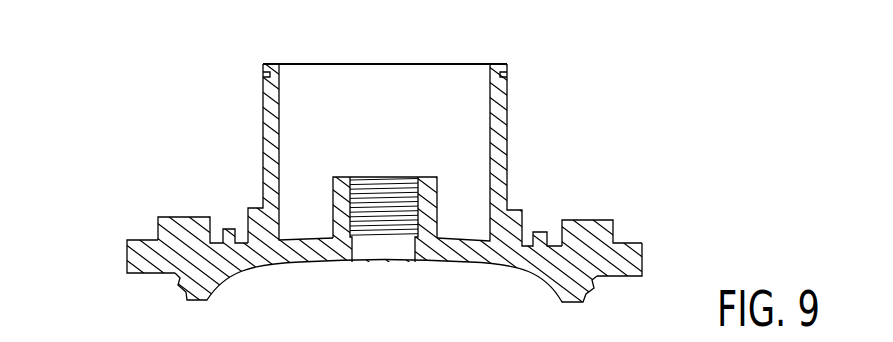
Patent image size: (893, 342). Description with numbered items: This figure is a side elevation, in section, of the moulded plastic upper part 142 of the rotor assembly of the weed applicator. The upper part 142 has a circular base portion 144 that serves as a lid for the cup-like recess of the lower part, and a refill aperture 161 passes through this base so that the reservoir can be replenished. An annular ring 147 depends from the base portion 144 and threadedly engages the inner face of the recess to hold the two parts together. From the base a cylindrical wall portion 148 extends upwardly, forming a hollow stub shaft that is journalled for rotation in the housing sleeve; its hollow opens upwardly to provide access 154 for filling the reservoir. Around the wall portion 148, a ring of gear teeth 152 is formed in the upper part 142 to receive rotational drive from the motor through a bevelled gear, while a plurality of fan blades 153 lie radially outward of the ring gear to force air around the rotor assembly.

The upper part 142 is at (447, 255).
The circular base portion 144 is at (243, 262).
The annular ring 147 is at (557, 290).
The cylindrical wall portion 148 is at (264, 118).
The ring of gear teeth 152 is at (173, 217).
The fan blades 153 is at (137, 257).
The access 154 is at (453, 66).
The refill aperture 161 is at (392, 170).